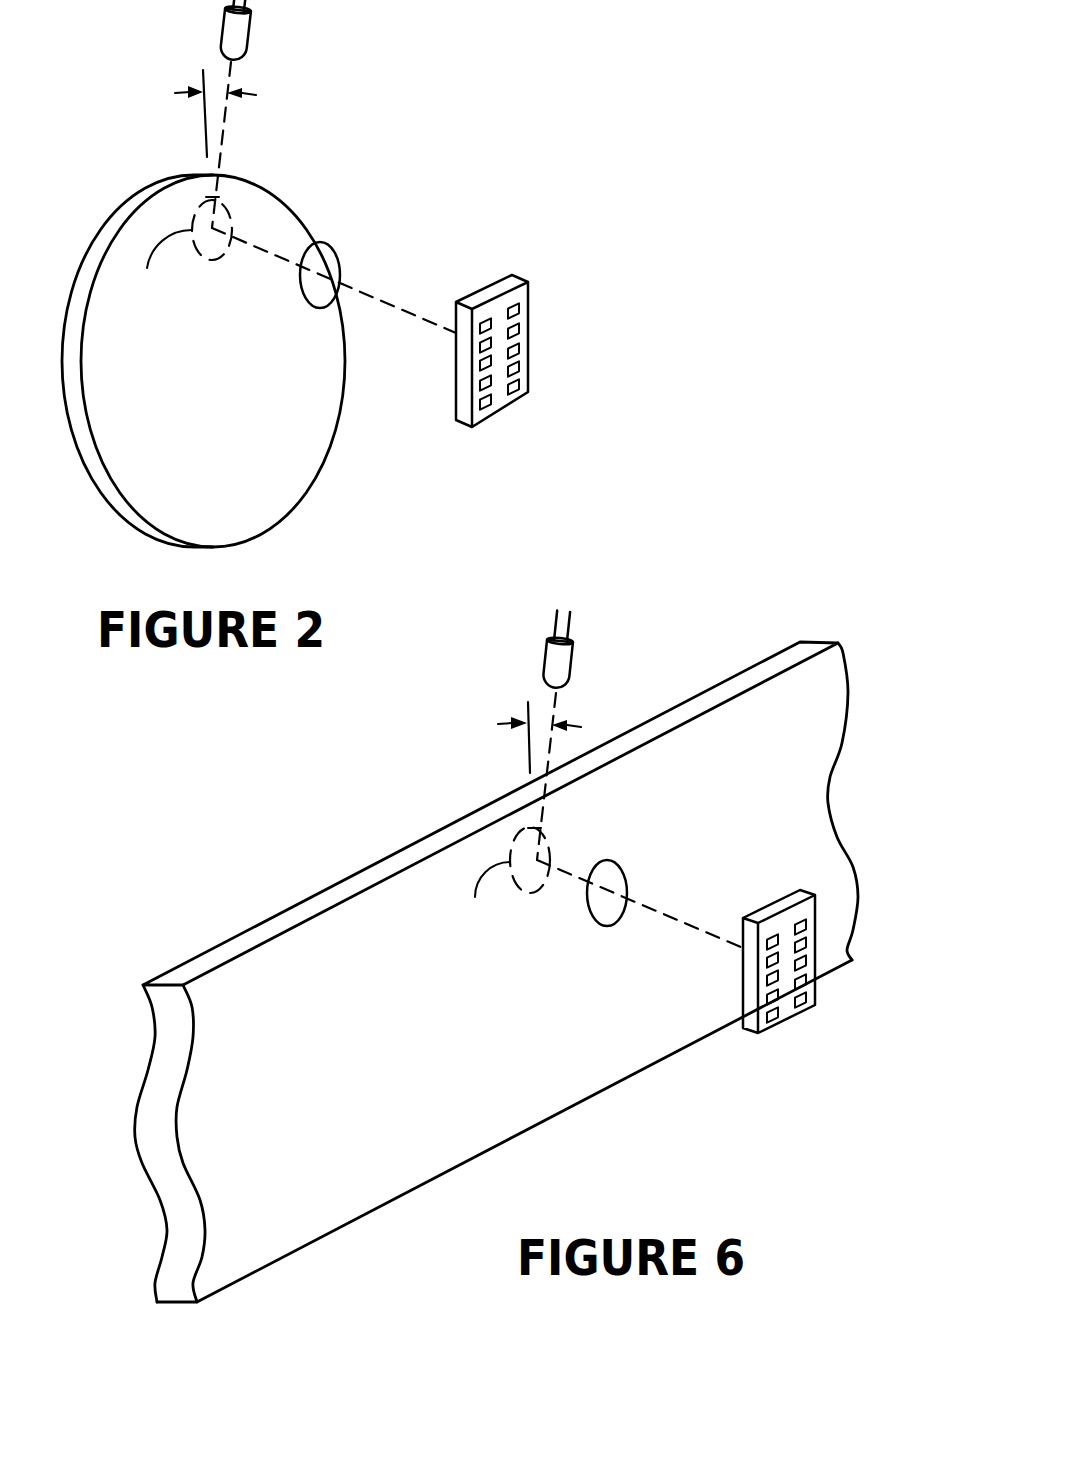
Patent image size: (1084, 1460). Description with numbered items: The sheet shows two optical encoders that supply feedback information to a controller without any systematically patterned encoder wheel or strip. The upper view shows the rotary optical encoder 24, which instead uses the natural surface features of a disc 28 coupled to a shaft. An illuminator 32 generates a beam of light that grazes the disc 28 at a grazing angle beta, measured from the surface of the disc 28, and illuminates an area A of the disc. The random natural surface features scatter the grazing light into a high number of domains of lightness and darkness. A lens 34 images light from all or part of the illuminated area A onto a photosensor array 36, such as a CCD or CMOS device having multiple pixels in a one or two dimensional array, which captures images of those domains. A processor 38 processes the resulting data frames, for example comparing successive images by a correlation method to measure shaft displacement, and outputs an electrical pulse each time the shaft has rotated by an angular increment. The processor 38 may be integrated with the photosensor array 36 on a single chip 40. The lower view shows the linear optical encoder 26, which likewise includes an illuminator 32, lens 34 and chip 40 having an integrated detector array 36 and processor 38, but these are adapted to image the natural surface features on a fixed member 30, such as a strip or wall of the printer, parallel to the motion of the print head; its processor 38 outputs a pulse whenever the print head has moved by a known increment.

In FIG. 2, the rotary optical encoder 24 is at (366, 97).
In FIG. 6, the linear optical encoder 26 is at (690, 592).
In FIG. 2, the disc 28 is at (265, 481).
In FIG. 6, the fixed member 30 is at (607, 1093).
In FIG. 2, the illuminator 32 is at (252, 32).
In FIG. 6, the illuminator 32 is at (573, 663).
In FIG. 2, the lens 34 is at (340, 277).
In FIG. 6, the lens 34 is at (605, 858).
In FIG. 2, the photosensor array 36 is at (510, 374).
In FIG. 6, the photosensor array 36 is at (792, 986).
In FIG. 2, the processor 38 is at (503, 396).
In FIG. 6, the processor 38 is at (787, 1008).
In FIG. 2, the chip 40 is at (496, 409).
In FIG. 6, the chip 40 is at (800, 1013).